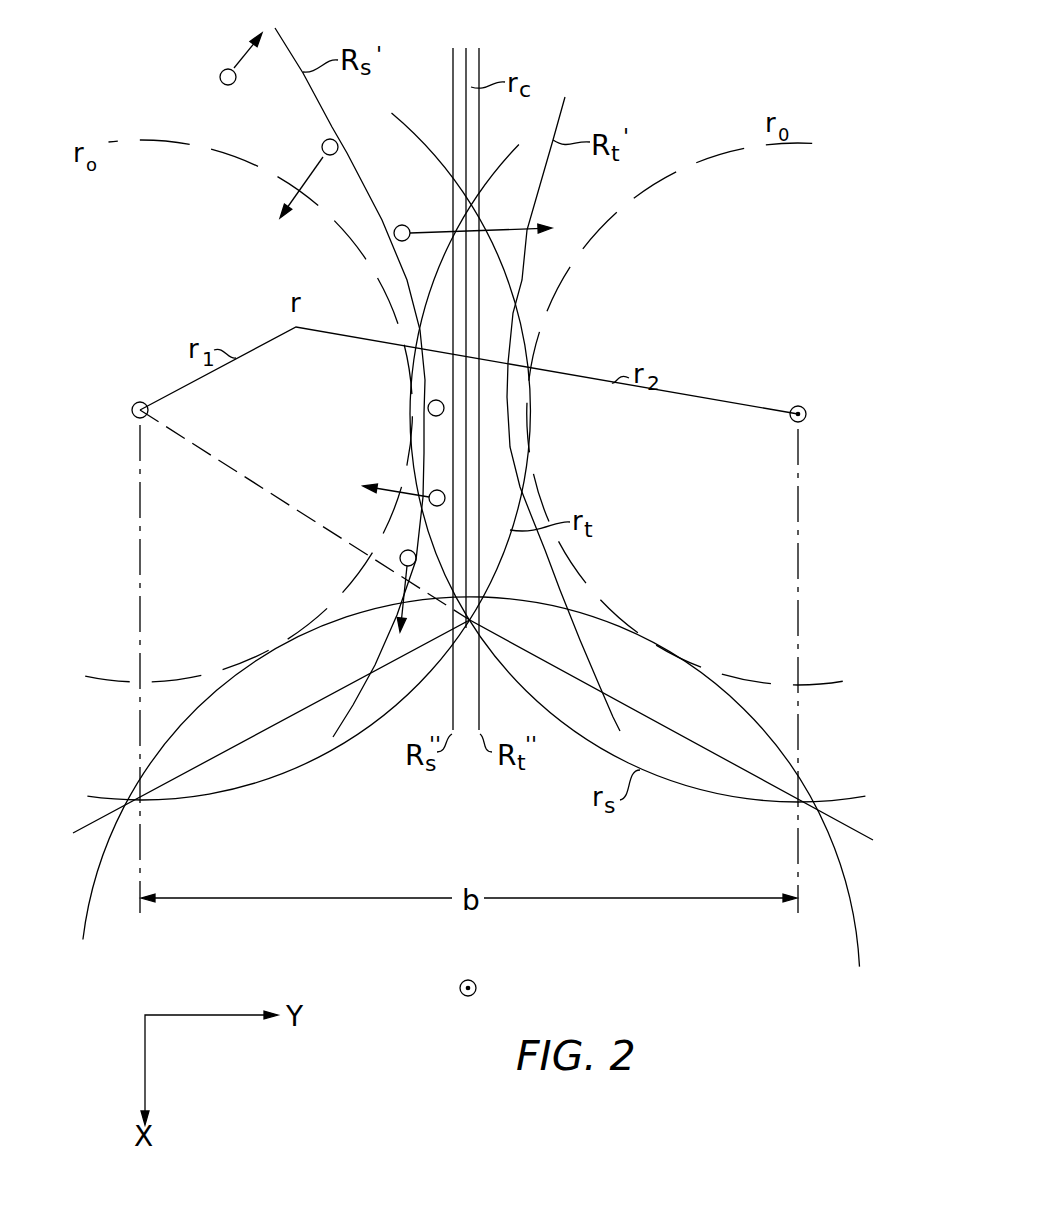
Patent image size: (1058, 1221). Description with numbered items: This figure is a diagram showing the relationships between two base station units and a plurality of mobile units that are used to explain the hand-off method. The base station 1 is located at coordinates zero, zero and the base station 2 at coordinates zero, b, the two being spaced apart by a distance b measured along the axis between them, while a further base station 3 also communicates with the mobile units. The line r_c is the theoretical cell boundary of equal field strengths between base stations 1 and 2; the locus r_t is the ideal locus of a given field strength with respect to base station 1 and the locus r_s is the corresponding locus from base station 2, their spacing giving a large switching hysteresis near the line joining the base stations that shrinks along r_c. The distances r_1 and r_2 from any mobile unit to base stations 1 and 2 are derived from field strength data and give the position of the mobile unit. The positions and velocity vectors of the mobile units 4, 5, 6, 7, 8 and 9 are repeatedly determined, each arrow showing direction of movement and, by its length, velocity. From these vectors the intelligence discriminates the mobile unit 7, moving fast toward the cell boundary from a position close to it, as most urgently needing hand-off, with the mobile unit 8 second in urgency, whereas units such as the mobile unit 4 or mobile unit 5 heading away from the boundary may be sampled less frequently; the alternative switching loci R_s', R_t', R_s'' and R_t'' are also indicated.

The base station 1 is at (103, 399).
The base station 2 is at (821, 402).
The base station 3 is at (482, 989).
The mobile unit 4 is at (309, 166).
The mobile unit 5 is at (405, 482).
The mobile unit 6 is at (229, 63).
The mobile unit 7 is at (473, 214).
The mobile unit 8 is at (438, 391).
The mobile unit 9 is at (403, 575).